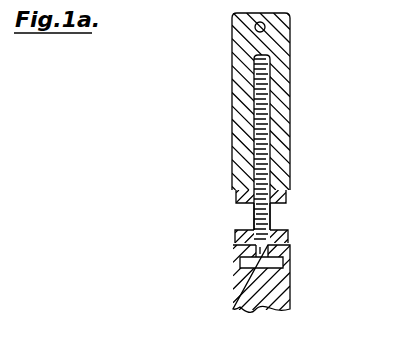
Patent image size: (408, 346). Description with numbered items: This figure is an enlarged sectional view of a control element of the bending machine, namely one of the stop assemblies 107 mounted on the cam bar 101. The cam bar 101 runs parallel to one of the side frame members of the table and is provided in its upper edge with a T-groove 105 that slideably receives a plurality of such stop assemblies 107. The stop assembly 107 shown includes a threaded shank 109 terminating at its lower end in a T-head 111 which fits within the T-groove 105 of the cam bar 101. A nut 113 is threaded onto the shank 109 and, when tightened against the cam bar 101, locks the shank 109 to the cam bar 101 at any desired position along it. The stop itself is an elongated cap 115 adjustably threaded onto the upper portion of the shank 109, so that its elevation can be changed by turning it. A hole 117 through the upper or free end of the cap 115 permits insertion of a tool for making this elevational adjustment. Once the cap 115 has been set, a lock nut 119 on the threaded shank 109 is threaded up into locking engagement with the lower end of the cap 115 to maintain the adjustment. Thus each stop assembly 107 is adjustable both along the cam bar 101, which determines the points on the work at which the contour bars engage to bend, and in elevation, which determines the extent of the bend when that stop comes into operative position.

The cam bar 101 is at (290, 291).
The T-groove 105 is at (284, 259).
The stop assembly 107 is at (216, 198).
The threaded shank 109 is at (271, 219).
The T-head 111 is at (250, 263).
The nut 113 is at (238, 236).
The elongated cap 115 is at (290, 96).
The hole 117 is at (255, 29).
The lock nut 119 is at (287, 201).